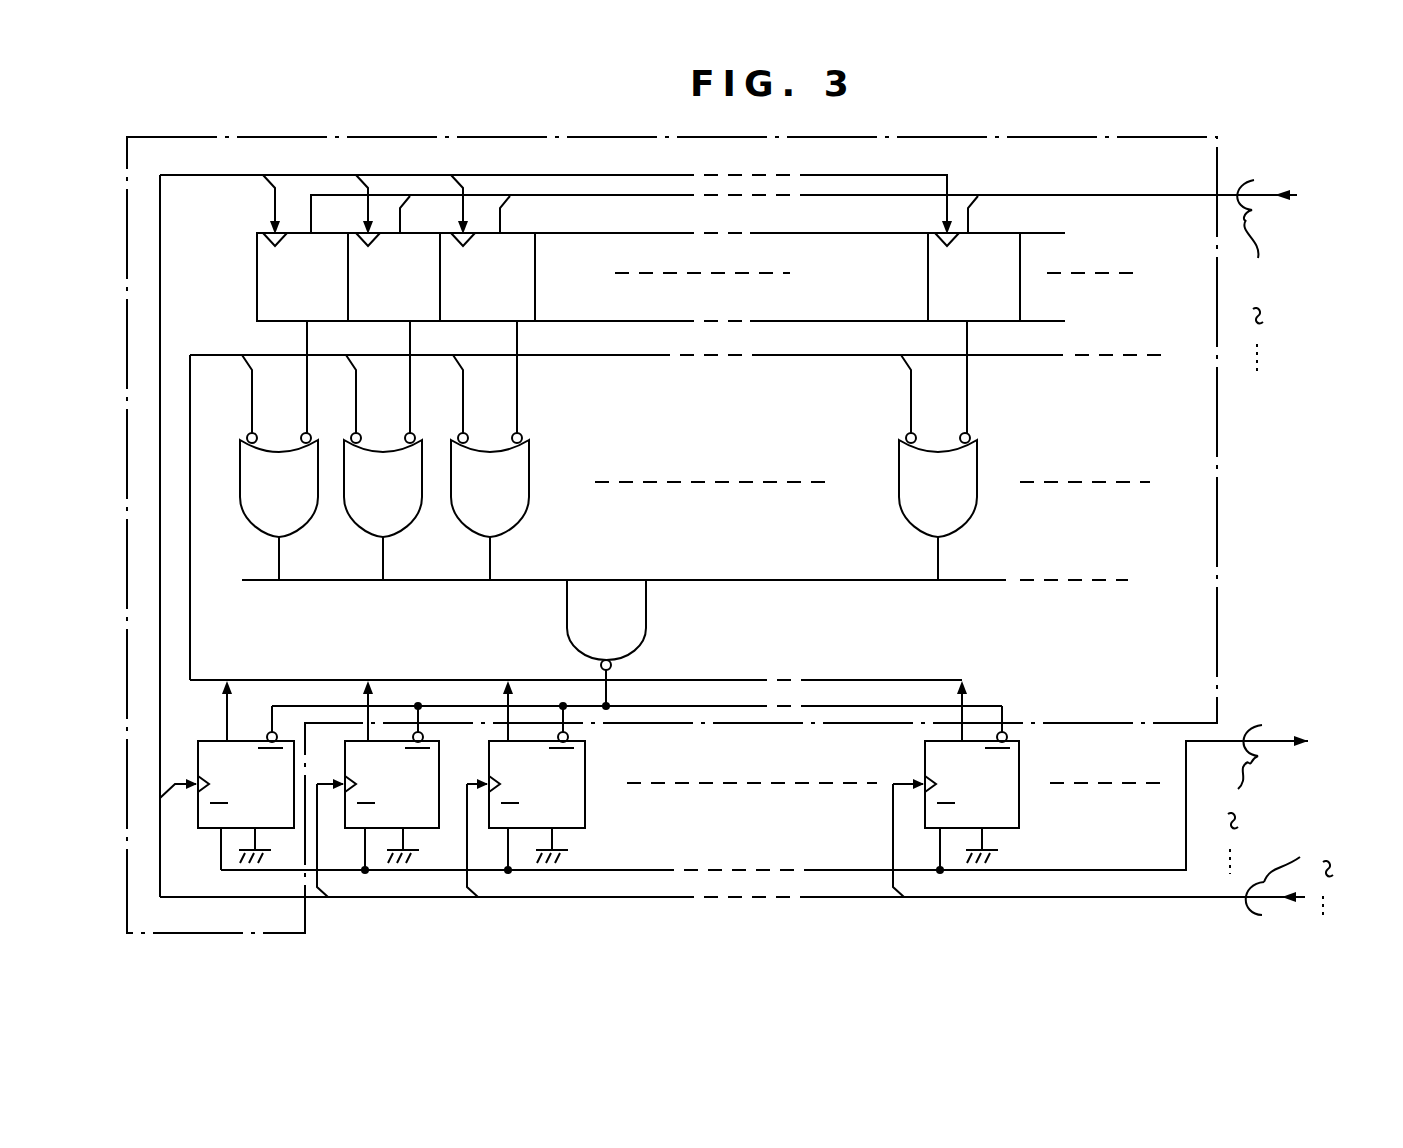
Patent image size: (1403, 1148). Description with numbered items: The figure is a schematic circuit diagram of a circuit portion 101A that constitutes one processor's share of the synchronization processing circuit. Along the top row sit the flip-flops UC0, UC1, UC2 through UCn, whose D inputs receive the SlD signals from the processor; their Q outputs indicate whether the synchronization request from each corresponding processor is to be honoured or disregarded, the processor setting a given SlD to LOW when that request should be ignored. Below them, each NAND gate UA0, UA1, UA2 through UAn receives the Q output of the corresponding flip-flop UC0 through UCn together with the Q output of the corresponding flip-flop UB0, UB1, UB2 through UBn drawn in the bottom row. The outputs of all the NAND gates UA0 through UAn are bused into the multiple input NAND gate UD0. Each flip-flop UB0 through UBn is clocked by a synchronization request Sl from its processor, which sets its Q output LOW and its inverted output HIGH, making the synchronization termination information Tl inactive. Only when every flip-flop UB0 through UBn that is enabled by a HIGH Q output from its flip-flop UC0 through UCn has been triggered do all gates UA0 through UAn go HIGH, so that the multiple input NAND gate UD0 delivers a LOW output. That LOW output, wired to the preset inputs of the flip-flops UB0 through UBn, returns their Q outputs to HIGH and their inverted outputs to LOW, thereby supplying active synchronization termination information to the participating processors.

The circuit portion 101A is at (311, 136).
The flip-flop UC0 is at (302, 278).
The flip-flop UC1 is at (394, 278).
The flip-flop UC2 is at (487, 278).
The flip-flop UCn is at (974, 278).
The NAND gate UA0 is at (279, 485).
The NAND gate UA1 is at (383, 485).
The NAND gate UA2 is at (490, 485).
The NAND gate UAn is at (938, 485).
The multiple input NAND gate UD0 is at (606, 625).
The flip-flop UB0 is at (246, 781).
The flip-flop UB1 is at (392, 781).
The flip-flop UB2 is at (537, 781).
The flip-flop UBn is at (972, 781).